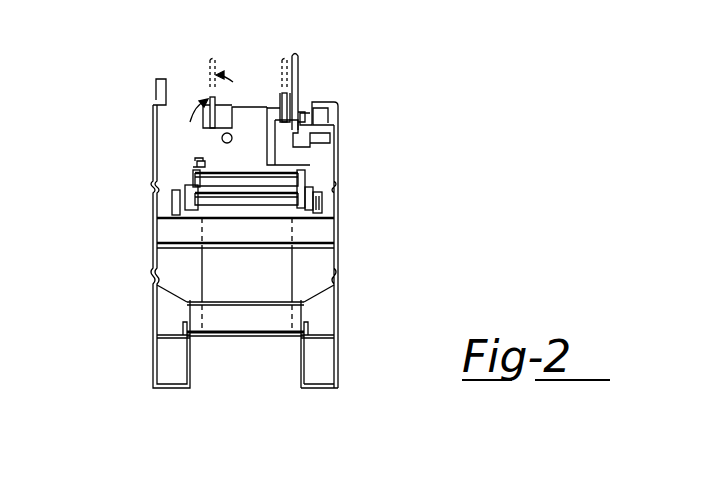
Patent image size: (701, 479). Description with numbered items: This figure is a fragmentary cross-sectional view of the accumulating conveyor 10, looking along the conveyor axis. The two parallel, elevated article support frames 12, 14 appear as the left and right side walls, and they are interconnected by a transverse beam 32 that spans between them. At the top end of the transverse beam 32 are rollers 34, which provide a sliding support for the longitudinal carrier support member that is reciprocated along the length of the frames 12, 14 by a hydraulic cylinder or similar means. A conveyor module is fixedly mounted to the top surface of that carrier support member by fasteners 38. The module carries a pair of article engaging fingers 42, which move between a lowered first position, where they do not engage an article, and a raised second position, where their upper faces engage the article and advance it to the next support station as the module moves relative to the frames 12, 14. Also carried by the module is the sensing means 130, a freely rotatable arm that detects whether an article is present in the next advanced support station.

The accumulating conveyor 10 is at (234, 240).
The article support frame 12 is at (153, 141).
The article support frame 14 is at (340, 173).
The transverse beam 32 is at (268, 270).
The rollers 34 is at (186, 190).
The fasteners 38 is at (200, 160).
The fingers 42 is at (208, 88).
The sensing means 130 is at (302, 84).